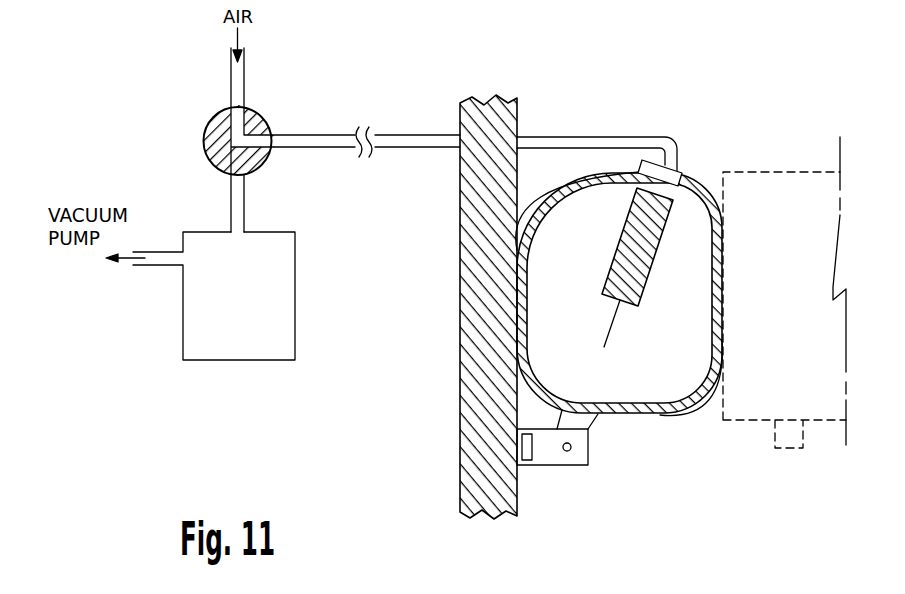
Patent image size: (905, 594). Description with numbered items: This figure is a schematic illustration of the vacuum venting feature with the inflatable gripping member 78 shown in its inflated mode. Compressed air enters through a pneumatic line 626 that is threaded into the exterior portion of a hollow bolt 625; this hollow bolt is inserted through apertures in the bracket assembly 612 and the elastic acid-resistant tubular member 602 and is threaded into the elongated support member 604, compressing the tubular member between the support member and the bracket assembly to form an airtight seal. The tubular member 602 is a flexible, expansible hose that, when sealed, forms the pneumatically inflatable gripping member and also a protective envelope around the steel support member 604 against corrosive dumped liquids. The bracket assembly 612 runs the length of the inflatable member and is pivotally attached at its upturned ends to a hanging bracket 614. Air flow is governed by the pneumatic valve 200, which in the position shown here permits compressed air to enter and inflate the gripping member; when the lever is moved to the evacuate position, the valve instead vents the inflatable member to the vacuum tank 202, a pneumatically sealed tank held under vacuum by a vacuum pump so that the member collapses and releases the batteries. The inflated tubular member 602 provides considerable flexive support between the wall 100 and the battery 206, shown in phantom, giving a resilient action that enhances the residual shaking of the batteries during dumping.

The pneumatic valve 200 is at (212, 125).
The vacuum tank 202 is at (198, 352).
The mounting wall 100 is at (470, 470).
The pneumatic line 626 is at (533, 137).
The elastic acid-resistant tubular member 602 is at (647, 407).
The inflatable gripping member 78 is at (703, 172).
The bracket assembly 612 is at (684, 178).
The hollow bolt 625 is at (643, 171).
The elongated support member 604 is at (640, 288).
The hanging bracket 614 is at (547, 457).
The batteries 206 is at (755, 172).